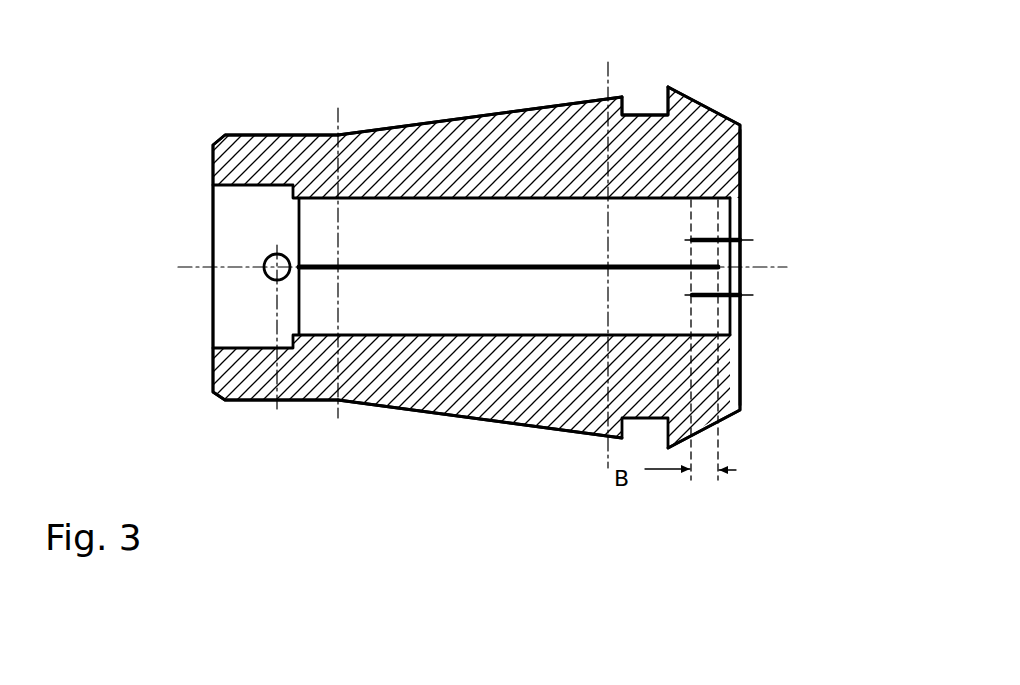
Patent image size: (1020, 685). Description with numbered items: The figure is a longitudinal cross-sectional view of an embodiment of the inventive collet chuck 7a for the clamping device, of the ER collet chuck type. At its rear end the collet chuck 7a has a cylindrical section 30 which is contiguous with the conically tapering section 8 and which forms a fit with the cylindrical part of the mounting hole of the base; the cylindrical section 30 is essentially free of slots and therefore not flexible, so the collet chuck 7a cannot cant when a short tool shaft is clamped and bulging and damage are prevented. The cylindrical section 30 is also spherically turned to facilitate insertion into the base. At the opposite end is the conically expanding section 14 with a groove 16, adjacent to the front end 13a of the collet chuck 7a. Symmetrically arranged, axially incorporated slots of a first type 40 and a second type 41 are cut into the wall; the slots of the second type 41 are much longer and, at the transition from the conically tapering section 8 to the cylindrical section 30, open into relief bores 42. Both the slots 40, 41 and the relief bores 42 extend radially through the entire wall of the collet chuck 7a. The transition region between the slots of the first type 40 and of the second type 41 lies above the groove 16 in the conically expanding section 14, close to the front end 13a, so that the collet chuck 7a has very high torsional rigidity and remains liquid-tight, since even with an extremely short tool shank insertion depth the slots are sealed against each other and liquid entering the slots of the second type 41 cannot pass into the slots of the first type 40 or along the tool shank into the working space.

The collet chuck 7a is at (440, 437).
The conically tapering section 8 is at (377, 407).
The front end 13a is at (740, 358).
The conically expanding section 14 is at (700, 105).
The groove 16 is at (641, 103).
The cylindrical section 30 is at (247, 402).
The slots of the first type 40 is at (706, 236).
The slots of the second type 41 is at (400, 263).
The relief bores 42 is at (266, 259).